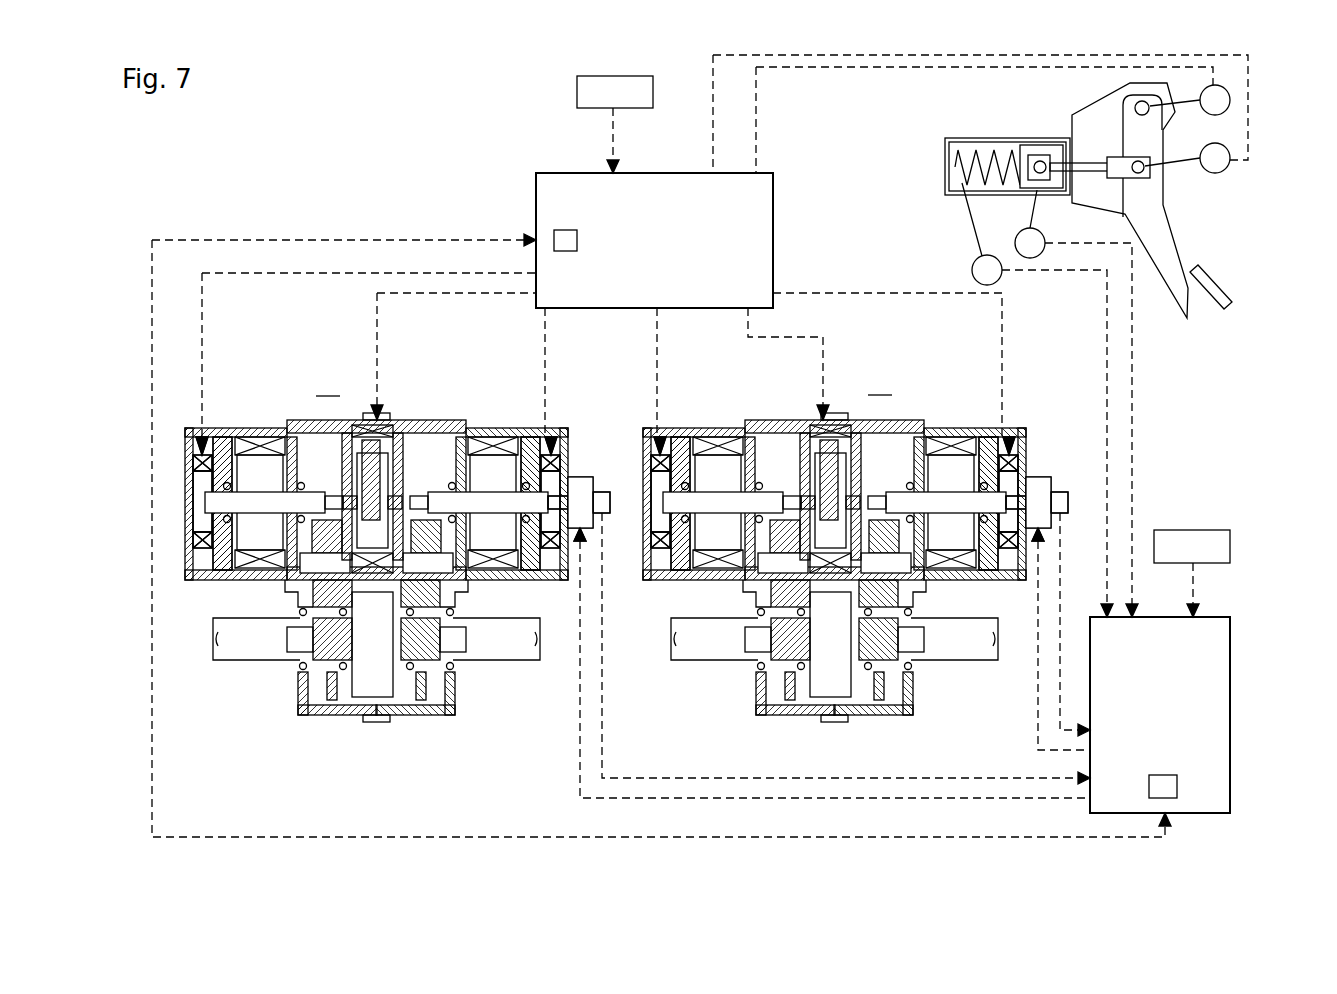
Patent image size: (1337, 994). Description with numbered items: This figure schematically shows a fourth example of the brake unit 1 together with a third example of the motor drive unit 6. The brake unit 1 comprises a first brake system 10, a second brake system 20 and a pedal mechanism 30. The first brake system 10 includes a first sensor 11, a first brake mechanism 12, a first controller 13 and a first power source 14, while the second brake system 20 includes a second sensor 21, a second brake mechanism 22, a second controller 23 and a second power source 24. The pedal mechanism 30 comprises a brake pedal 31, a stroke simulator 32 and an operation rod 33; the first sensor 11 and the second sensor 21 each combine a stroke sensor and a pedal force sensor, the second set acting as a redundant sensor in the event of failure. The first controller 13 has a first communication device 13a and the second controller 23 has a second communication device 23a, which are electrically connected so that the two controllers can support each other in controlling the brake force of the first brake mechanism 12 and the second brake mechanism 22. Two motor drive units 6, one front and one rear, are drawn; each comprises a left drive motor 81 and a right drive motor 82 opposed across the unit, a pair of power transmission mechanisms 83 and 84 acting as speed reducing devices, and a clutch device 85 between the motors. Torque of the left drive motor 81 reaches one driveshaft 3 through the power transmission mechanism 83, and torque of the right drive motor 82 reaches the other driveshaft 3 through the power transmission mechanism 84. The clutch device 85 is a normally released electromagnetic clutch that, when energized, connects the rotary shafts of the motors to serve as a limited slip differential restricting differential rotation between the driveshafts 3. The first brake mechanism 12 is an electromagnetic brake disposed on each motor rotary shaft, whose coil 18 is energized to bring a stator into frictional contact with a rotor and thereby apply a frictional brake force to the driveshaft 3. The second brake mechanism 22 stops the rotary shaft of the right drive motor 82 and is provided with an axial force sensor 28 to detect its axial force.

The brake unit 1 is at (706, 446).
The driveshaft 3 is at (228, 652).
The motor drive unit 6 is at (427, 378).
The first brake system 10 is at (562, 370).
The first sensor 11 is at (1230, 172).
The first brake mechanism 12 is at (190, 415).
The first controller 13 is at (536, 190).
The first communication device 13a is at (553, 238).
The first power source 14 is at (577, 92).
The coil 18 is at (172, 352).
The second brake system 20 is at (607, 418).
The second sensor 21 is at (968, 248).
The second brake mechanism 22 is at (575, 475).
The second controller 23 is at (1230, 648).
The second communication device 23a is at (1177, 786).
The second power source 24 is at (1230, 546).
The axial force sensor 28 is at (610, 500).
The pedal mechanism 30 is at (1243, 292).
The brake pedal 31 is at (1183, 230).
The stroke simulator 32 is at (1002, 122).
The operation rod 33 is at (1090, 170).
The left drive motor 81 is at (262, 455).
The right drive motor 82 is at (480, 460).
The power transmission mechanism 83 is at (270, 590).
The power transmission mechanism 84 is at (467, 590).
The clutch device 85 is at (385, 398).